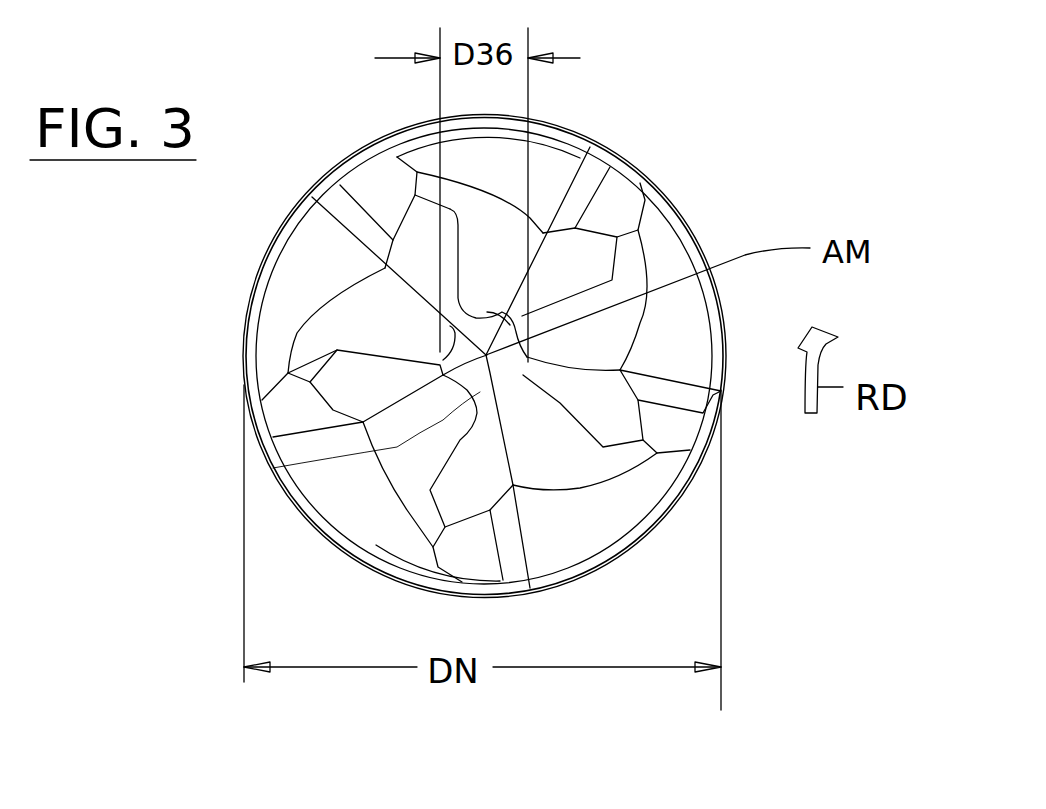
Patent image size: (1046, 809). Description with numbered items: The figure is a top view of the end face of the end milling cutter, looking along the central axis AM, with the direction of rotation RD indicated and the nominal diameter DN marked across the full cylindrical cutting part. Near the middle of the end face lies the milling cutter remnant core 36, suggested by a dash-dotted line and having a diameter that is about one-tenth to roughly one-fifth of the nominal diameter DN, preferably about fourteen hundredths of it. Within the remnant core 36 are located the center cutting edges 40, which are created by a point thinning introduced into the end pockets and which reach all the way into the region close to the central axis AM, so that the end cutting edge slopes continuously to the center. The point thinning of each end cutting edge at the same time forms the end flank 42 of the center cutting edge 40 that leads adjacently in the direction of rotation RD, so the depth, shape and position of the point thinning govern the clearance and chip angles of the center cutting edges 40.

The milling cutter remnant core 36 is at (273, 468).
The center cutting edge 40 is at (748, 488).
The end flank 42 is at (515, 585).